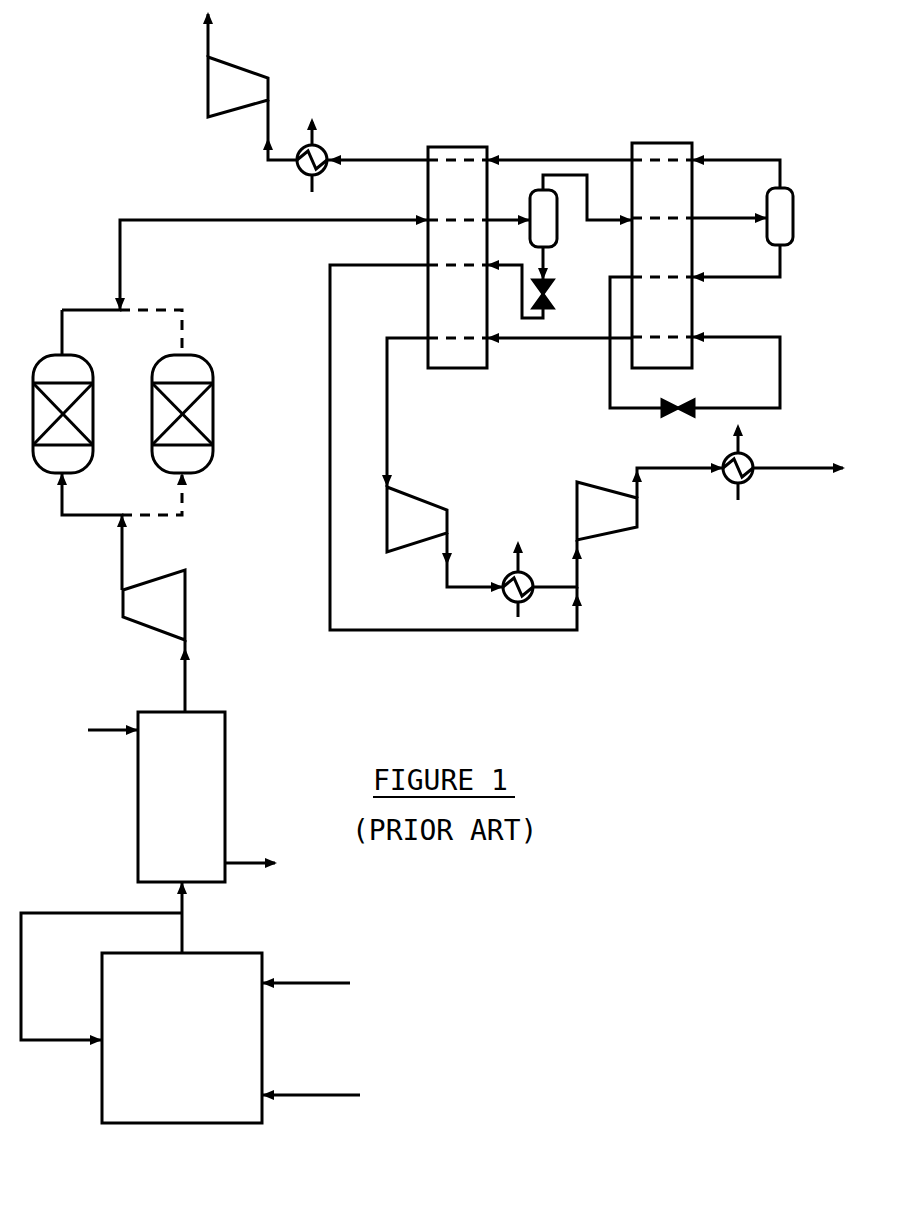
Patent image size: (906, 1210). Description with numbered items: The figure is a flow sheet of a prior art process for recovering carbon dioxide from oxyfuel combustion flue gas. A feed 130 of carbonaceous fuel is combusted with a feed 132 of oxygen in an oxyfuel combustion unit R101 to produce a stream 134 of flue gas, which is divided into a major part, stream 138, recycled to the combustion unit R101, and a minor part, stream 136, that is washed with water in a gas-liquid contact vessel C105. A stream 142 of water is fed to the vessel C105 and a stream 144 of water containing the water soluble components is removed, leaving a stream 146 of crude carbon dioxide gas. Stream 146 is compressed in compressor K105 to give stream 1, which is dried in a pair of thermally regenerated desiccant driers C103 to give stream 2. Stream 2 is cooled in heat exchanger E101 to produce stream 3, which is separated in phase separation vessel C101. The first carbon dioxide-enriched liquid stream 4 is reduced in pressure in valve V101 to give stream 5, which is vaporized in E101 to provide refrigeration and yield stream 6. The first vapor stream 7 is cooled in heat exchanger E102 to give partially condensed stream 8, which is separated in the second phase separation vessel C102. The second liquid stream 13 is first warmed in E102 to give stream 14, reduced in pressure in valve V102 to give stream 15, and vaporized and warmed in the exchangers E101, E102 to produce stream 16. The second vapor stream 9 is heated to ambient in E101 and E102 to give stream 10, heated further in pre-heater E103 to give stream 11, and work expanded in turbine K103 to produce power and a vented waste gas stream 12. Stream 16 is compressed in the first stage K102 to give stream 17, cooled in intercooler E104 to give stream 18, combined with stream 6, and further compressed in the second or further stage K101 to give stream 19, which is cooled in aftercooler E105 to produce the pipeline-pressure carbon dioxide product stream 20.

The stream of washed flue gas 1 is at (124, 562).
The stream of dried waste carbon dioxide gas 2 is at (210, 218).
The stream of crude gaseous carbon dioxide 3 is at (515, 220).
The stream of first carbon dioxide-enriched liquid 4 is at (545, 255).
The stream of reduced pressure first carbon dioxide-enriched liquid 5 is at (502, 282).
The stream of first carbon dioxide-enriched gas 6 is at (320, 288).
The stream of first vapor 7 is at (600, 215).
The stream of partially condensed fluid 8 is at (740, 215).
The stream of second vapor 9 is at (755, 158).
The stream of warmed second gas 10 is at (358, 158).
The stream of pre-heated second gas 11 is at (265, 125).
The stream of waste gas 12 is at (200, 45).
The stream of second carbon dioxide-enriched liquid 13 is at (770, 278).
The stream of warmed second carbon dioxide-enriched liquid 14 is at (610, 360).
The stream of reduced pressure second carbon dioxide-enriched liquid 15 is at (782, 350).
The stream of second carbon dioxide-enriched gas 16 is at (389, 405).
The stream of compressed carbon dioxide gas 17 is at (460, 585).
The stream of cooled compressed carbon dioxide gas 18 is at (566, 582).
The stream of further compressed carbon dioxide gas 19 is at (694, 472).
The stream of cooled further compressed carbon dioxide gas 20 is at (805, 470).
The second or further compressor stage K101 is at (602, 484).
The first compressor stage K102 is at (426, 545).
The turbine K103 is at (248, 66).
The compressor K105 is at (186, 600).
The heat exchanger E101 is at (482, 147).
The heat exchanger E102 is at (688, 143).
The pre-heater E103 is at (300, 174).
The intercooler E104 is at (505, 597).
The aftercooler E105 is at (730, 484).
The phase separation vessel C101 is at (557, 212).
The second phase separation vessel C102 is at (793, 197).
The thermally regenerated desiccant driers C103 is at (213, 420).
The gas-liquid contact vessel C105 is at (226, 755).
The valve V101 is at (572, 312).
The valve V102 is at (670, 416).
The oxyfuel combustion unit R101 is at (195, 1125).
The feed of carbonaceous fuel 130 is at (331, 986).
The feed of oxygen 132 is at (334, 1098).
The stream of flue gas 134 is at (184, 933).
The minor part stream of flue gas 136 is at (184, 897).
The major part stream of flue gas 138 is at (88, 912).
The stream of water 142 is at (106, 728).
The stream of water comprising water soluble components 144 is at (246, 862).
The stream of crude carbon dioxide gas 146 is at (186, 680).